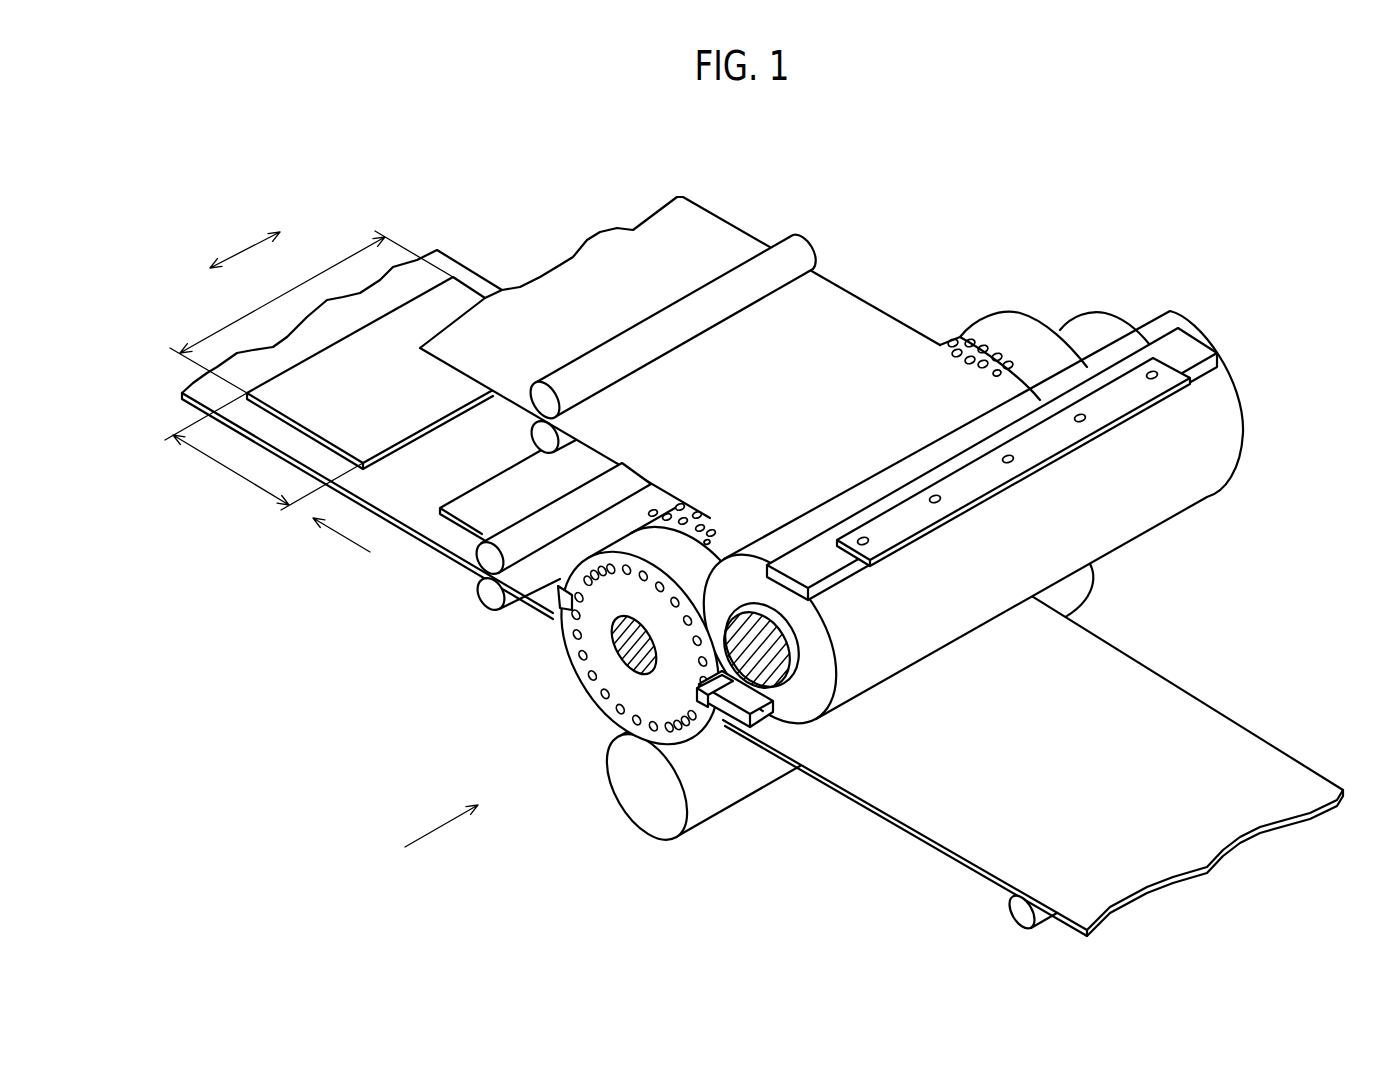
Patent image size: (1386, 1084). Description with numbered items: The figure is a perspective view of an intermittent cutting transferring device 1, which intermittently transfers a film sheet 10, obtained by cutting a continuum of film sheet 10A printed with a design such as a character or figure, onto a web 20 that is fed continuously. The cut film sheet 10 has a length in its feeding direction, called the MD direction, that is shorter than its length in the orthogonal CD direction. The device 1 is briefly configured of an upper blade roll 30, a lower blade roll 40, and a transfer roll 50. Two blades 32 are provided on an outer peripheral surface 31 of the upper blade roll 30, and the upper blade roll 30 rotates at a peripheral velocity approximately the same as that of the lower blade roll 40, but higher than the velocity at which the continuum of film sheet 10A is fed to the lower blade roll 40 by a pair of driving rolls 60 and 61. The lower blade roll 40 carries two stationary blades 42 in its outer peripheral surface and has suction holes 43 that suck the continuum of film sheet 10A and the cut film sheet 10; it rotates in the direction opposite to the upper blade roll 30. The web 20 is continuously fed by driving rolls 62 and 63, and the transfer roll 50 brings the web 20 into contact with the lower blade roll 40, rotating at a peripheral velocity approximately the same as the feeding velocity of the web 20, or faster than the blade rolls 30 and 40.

The intermittent cutting transferring device 1 is at (1213, 173).
The film sheet 10 is at (458, 298).
The continuum of film sheet 10A is at (727, 237).
The web 20 is at (1210, 750).
The upper blade roll 30 is at (1003, 528).
The outer peripheral surface 31 is at (1190, 485).
The blades 32 is at (1160, 352).
The lower blade roll 40 is at (839, 498).
The stationary blades 42 is at (568, 597).
The suction holes 43 is at (957, 337).
The transfer roll 50 is at (627, 859).
The driving roll 60 is at (800, 248).
The driving roll 61 is at (548, 435).
The driving roll 62 is at (483, 553).
The driving roll 63 is at (488, 598).